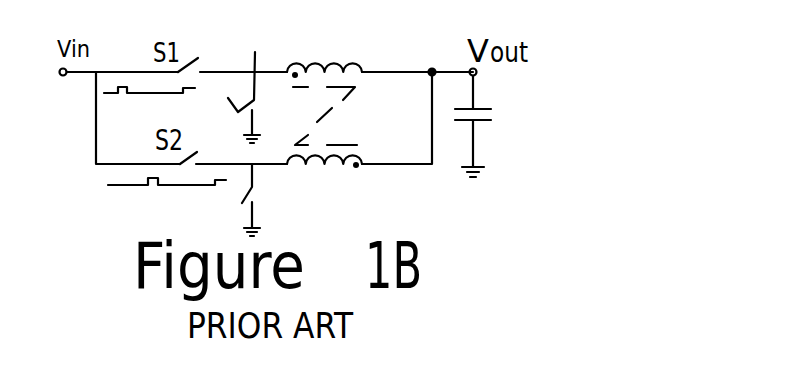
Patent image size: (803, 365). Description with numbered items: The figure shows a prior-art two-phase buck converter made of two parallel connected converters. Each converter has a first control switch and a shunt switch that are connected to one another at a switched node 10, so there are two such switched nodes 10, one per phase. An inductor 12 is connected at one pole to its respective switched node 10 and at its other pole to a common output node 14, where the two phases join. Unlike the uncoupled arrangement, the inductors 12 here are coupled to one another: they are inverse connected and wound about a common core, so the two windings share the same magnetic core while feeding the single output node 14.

The switched node 10 is at (255, 52).
The inductor 12 is at (362, 67).
The output node 14 is at (432, 72).